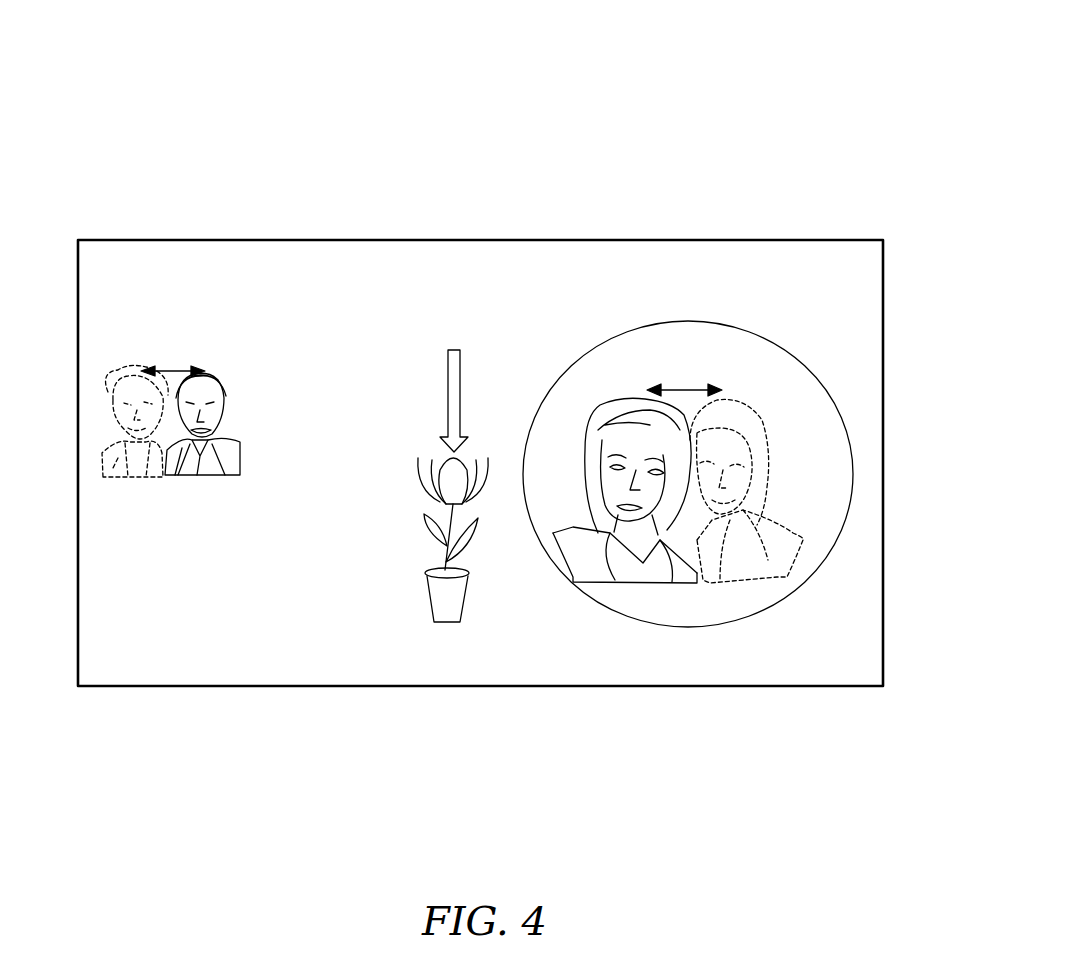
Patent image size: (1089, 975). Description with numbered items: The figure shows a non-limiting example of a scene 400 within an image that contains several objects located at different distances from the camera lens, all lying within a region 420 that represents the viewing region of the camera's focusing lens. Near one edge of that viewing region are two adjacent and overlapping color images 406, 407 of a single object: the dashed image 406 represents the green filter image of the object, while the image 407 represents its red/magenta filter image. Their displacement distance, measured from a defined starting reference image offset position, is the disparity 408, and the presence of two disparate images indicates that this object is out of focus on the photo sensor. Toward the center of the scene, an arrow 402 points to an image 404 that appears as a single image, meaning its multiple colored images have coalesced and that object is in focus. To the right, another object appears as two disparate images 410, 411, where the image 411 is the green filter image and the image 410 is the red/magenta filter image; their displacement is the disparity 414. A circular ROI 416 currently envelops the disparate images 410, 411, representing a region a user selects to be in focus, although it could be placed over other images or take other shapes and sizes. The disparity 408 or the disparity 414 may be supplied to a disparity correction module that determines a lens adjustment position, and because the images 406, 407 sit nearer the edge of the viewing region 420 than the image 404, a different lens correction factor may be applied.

The image display environment 400 is at (820, 108).
The arrow 402 is at (456, 389).
The image 404 is at (417, 575).
The image 406 is at (141, 371).
The image 407 is at (206, 370).
The disparity 408 is at (170, 371).
The image 410 is at (643, 405).
The image 411 is at (728, 405).
The disparity 414 is at (683, 392).
The ROI 416 is at (693, 627).
The region 420 is at (483, 686).